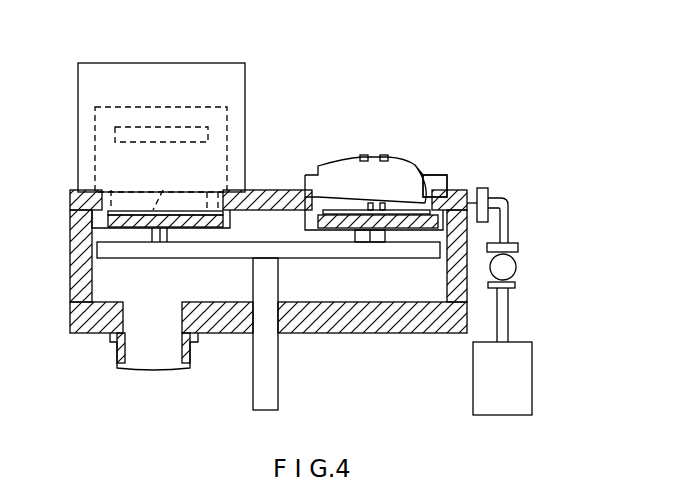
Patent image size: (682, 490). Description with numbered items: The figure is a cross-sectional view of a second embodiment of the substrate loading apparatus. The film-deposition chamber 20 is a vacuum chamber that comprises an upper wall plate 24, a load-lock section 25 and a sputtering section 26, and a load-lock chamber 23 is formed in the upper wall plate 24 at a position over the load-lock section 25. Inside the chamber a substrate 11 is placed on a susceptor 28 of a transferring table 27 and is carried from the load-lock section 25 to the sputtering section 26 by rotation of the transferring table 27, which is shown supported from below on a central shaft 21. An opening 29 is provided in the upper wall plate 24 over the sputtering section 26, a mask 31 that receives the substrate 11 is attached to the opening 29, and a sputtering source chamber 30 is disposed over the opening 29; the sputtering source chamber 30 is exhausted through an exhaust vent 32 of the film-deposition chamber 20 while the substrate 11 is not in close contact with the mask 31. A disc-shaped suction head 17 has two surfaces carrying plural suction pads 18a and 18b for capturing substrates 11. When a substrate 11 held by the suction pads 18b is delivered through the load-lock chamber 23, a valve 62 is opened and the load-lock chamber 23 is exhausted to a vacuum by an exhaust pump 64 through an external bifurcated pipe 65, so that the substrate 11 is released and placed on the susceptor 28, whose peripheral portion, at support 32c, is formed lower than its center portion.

The substrate 11 is at (404, 154).
The suction head 17 is at (337, 167).
The suction pads 18a is at (387, 157).
The suction pads 18b is at (383, 204).
The film-deposition chamber 20 is at (393, 330).
The shaft 21 is at (245, 267).
The load-lock chamber 23 is at (427, 172).
The upper wall plate 24 is at (271, 196).
The load-lock section 25 is at (420, 297).
The sputtering section 26 is at (110, 290).
The transferring table 27 is at (290, 250).
The susceptor 28 is at (188, 228).
The opening 29 is at (130, 195).
The sputtering source chamber 30 is at (167, 63).
The mask 31 is at (212, 192).
The exhaust vent 32 is at (157, 353).
The recess support 32c is at (430, 240).
The valve 62 is at (518, 270).
The exhaust pump 64 is at (527, 390).
The bifurcated pipe 65 is at (508, 205).